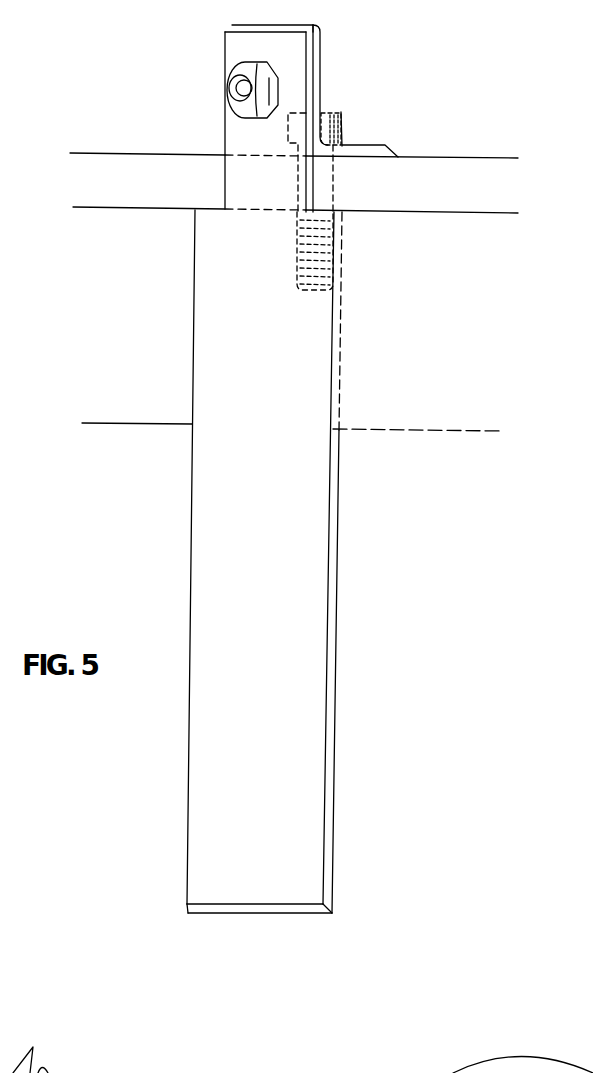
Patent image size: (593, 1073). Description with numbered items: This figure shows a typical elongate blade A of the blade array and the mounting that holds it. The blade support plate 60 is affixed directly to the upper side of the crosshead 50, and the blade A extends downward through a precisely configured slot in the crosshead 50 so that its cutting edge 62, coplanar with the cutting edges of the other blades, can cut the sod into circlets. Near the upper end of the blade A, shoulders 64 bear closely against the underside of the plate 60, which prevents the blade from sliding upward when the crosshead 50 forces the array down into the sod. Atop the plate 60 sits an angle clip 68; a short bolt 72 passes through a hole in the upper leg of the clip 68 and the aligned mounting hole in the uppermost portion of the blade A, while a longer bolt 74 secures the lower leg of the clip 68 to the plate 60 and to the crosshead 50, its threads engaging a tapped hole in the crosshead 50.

The crosshead 50 is at (416, 432).
The blade support plate 60 is at (110, 152).
The cutting edge 62 is at (205, 913).
The shoulders 64 is at (212, 207).
The angle clip 68 is at (395, 149).
The short bolt 72 is at (227, 76).
The longer bolt 74 is at (342, 112).
The blade A is at (336, 747).